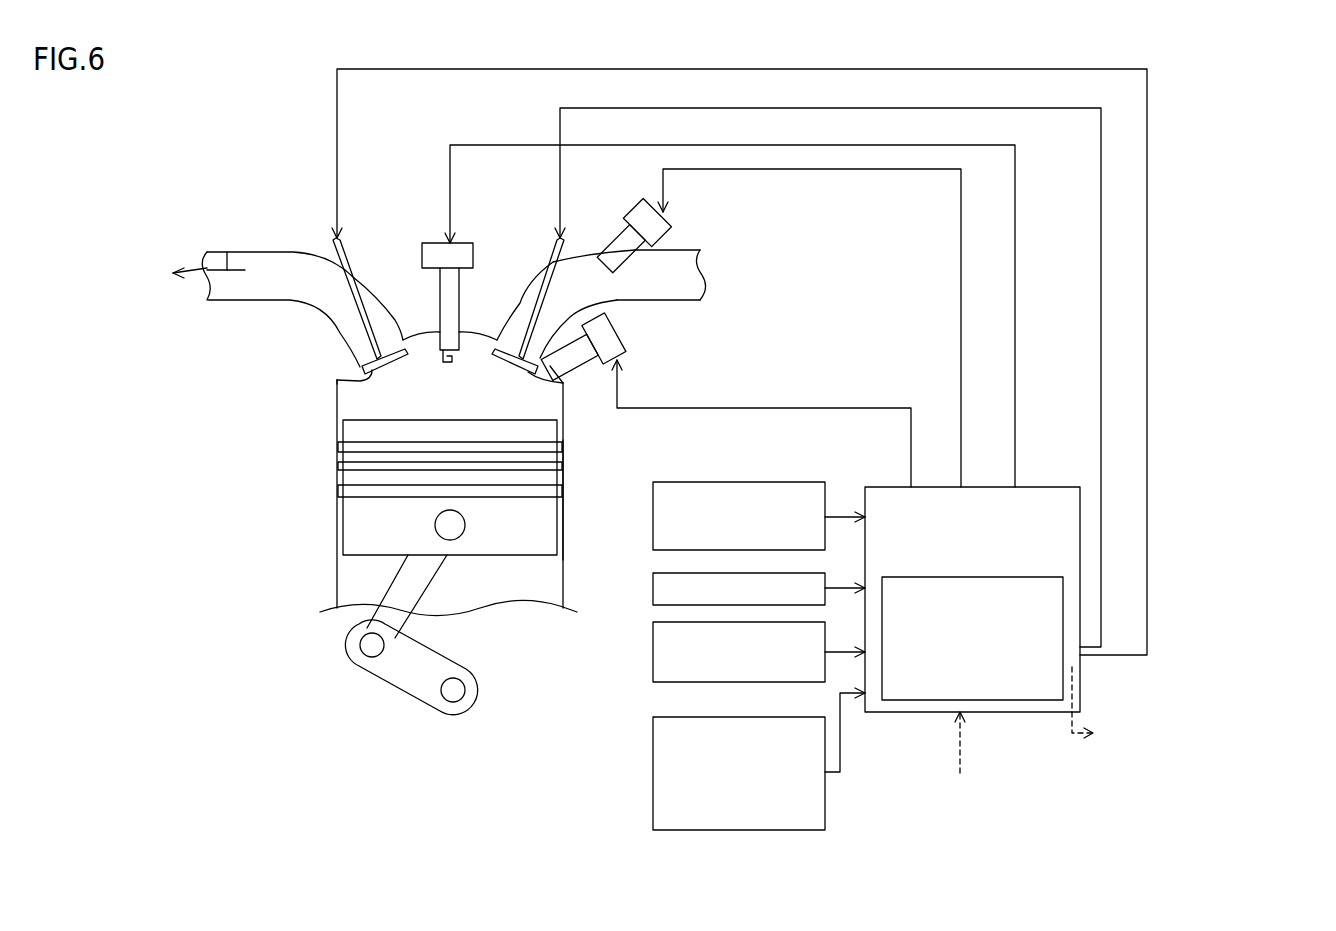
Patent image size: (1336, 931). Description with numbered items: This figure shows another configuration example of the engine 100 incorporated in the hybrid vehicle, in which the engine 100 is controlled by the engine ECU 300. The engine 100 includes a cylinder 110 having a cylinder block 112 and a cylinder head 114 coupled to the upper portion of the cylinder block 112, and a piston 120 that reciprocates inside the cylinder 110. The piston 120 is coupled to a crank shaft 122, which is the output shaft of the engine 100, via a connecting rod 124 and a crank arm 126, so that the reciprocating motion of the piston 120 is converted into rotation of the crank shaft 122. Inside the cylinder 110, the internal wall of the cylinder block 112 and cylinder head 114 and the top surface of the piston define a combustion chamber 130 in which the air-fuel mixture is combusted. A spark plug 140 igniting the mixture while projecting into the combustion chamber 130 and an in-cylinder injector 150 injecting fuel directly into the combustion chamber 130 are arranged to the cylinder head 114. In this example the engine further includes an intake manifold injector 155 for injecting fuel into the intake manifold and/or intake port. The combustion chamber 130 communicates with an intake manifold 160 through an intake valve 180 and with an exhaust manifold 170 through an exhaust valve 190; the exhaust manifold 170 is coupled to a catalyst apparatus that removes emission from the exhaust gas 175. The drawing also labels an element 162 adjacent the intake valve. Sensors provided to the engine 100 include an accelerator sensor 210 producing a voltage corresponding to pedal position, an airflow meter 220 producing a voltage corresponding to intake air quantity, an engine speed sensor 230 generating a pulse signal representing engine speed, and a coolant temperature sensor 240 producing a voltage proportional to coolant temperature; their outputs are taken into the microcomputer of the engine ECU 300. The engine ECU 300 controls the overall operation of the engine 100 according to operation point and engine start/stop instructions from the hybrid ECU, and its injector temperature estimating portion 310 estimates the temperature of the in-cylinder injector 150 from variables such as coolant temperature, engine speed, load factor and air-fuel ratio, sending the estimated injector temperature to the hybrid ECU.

The engine 100 is at (388, 188).
The cylinder 110 is at (320, 433).
The cylinder block 112 is at (565, 533).
The cylinder head 114 is at (348, 363).
The piston 120 is at (520, 545).
The crank shaft 122 is at (473, 690).
The connecting rod 124 is at (397, 595).
The crank arm 126 is at (398, 690).
The combustion chamber 130 is at (372, 405).
The spark plug 140 is at (437, 323).
The in-cylinder injector 150 is at (581, 371).
The intake manifold injector 155 is at (636, 201).
The intake manifold 160 is at (663, 296).
The intake valve 162 is at (545, 332).
The exhaust manifold 170 is at (243, 300).
The exhaust gas 175 is at (227, 252).
The intake valve 180 is at (518, 329).
The exhaust valve 190 is at (333, 382).
The accelerator sensor 210 is at (653, 500).
The airflow meter 220 is at (653, 590).
The engine speed sensor 230 is at (653, 655).
The coolant temperature sensor 240 is at (653, 775).
The engine ECU 300 is at (882, 487).
The injector temperature estimating portion 310 is at (997, 700).